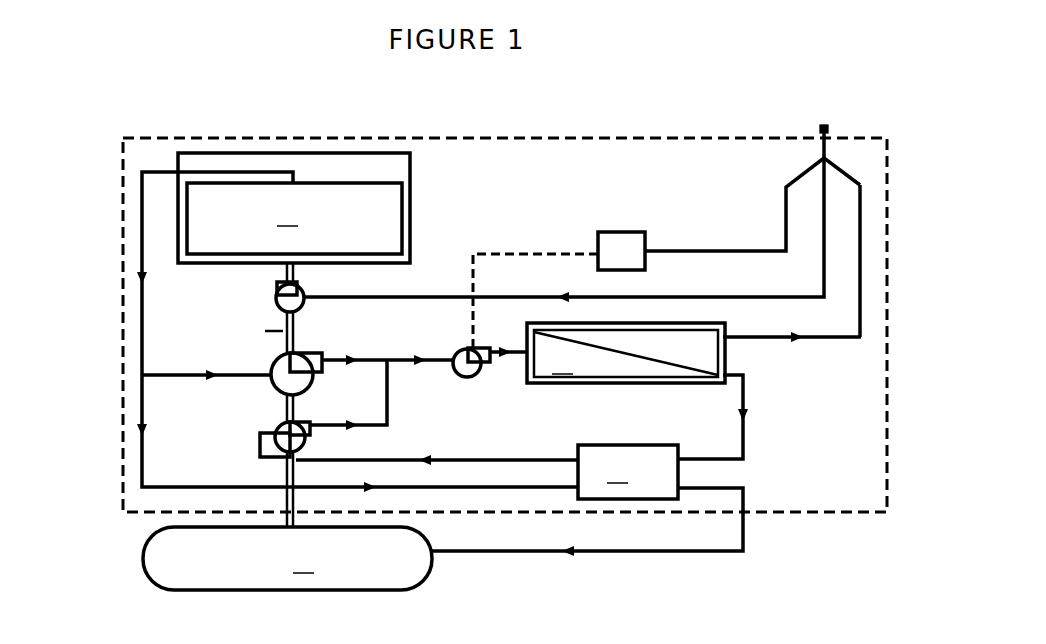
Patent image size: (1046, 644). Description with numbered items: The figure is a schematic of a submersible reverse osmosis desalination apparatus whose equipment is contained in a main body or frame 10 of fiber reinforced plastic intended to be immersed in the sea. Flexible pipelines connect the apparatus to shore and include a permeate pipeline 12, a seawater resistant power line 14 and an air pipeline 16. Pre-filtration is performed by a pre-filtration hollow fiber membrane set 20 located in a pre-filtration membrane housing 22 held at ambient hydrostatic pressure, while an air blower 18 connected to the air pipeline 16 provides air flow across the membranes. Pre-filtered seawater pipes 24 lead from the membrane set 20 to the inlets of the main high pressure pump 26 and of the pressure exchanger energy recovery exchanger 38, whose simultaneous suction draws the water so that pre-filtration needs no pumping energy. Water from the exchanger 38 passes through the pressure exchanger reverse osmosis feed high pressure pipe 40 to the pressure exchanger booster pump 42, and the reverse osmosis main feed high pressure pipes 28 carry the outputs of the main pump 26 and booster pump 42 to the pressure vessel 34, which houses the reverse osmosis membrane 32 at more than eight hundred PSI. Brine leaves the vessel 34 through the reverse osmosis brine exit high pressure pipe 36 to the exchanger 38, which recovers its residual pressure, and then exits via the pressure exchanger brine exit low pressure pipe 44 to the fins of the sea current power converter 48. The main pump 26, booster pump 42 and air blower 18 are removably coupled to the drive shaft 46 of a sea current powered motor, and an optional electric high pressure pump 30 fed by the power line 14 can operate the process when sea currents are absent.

The main body or frame 10 is at (122, 327).
The permeate pipeline 12 is at (865, 242).
The power line 14 is at (785, 205).
The air pipeline 16 is at (826, 252).
The air blower 18 is at (283, 302).
The pre-filtration hollow fiber membrane set 20 is at (294, 218).
The pre-filtration membrane housing 22 is at (368, 171).
The pre-filtered seawater pipes 24 is at (145, 305).
The main high pressure pump 26 is at (296, 372).
The reverse osmosis main feed high pressure pipes 28 is at (368, 360).
The electric high pressure pump 30 is at (470, 370).
The reverse osmosis membrane 32 is at (626, 353).
The pressure vessel 34 is at (727, 352).
The reverse osmosis brine exit high pressure pipe 36 is at (748, 441).
The pressure exchanger energy recovery exchanger 38 is at (628, 472).
The pressure exchanger reverse osmosis feed high pressure pipe 40 is at (490, 458).
The pressure exchanger booster pump 42 is at (288, 440).
The pressure exchanger brine exit low pressure pipe 44 is at (657, 553).
The drive shaft 46 is at (175, 395).
The sea current power converter 48 is at (287, 558).